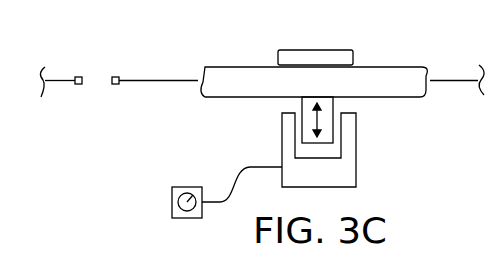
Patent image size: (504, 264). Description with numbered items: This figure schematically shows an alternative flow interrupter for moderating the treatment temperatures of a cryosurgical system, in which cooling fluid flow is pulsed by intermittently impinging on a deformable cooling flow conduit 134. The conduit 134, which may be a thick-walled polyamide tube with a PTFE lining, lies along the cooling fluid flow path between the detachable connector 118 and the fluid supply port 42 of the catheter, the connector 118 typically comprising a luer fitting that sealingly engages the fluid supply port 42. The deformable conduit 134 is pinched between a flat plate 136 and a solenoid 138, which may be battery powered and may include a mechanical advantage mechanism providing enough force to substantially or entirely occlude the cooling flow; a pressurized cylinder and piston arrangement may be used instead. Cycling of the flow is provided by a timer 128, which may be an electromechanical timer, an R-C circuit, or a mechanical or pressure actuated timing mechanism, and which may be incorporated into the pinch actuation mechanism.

The fluid supply port 42 is at (80, 76).
The detachable connector 118 is at (115, 76).
The timer 128 is at (172, 187).
The deformable cooling flow conduit 134 is at (399, 67).
The flat plate 136 is at (306, 50).
The solenoid 138 is at (356, 140).